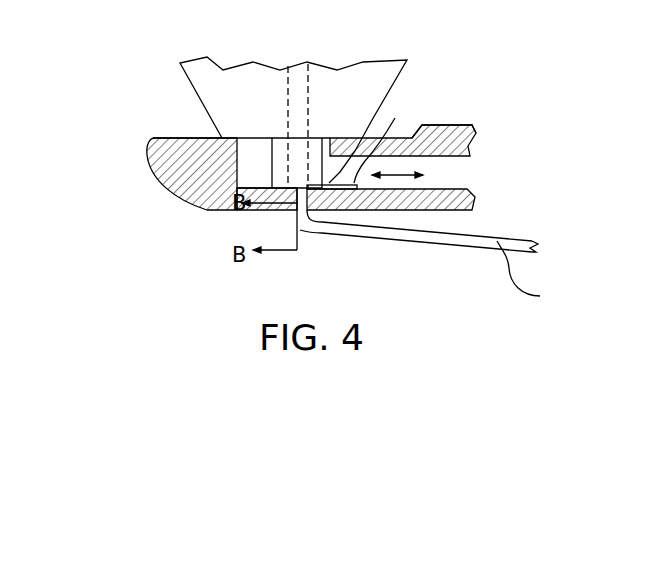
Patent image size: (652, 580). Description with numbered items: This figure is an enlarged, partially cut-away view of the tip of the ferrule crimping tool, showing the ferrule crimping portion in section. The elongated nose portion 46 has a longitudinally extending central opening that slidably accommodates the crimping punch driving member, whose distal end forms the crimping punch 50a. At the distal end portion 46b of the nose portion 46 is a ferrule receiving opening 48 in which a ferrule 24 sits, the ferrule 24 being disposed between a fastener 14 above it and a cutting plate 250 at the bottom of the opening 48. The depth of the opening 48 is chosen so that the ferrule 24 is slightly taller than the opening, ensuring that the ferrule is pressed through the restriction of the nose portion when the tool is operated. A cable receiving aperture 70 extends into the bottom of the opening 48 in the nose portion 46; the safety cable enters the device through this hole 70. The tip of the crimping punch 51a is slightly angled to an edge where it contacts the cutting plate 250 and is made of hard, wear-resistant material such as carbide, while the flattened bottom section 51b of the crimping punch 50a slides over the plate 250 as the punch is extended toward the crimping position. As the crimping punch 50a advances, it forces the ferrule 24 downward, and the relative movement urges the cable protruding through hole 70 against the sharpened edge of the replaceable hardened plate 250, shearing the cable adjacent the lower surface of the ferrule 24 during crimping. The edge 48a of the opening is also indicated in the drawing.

The fastener 14 is at (390, 77).
The ferrule 24 is at (313, 137).
The elongated nose portion 46 is at (476, 132).
The distal end portion 46b is at (205, 212).
The ferrule receiving opening 48 is at (247, 157).
The edge of opening 48a is at (326, 137).
The tip of the crimping punch 51a is at (395, 118).
The flattened bottom section 51b is at (444, 126).
The crimping punch 50a is at (447, 174).
The cable receiving aperture 70 is at (303, 228).
The cutting plate 250 is at (362, 198).